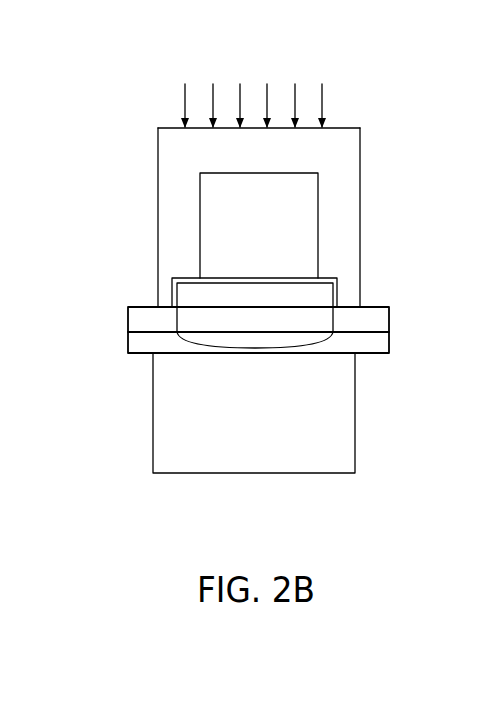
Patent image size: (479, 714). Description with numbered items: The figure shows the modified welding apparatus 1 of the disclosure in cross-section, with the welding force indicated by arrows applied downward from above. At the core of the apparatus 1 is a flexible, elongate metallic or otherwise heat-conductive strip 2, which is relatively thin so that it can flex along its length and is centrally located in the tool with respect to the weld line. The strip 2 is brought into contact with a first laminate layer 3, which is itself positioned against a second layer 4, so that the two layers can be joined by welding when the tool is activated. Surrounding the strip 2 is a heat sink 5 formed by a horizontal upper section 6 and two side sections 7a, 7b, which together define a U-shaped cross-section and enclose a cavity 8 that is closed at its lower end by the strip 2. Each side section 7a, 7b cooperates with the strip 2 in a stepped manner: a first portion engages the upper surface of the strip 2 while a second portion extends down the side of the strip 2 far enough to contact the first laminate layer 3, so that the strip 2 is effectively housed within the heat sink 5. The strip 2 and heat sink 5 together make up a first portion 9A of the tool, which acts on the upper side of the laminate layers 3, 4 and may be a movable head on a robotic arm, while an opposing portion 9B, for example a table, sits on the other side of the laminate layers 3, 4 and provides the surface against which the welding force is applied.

The welding apparatus 1 is at (382, 90).
The strip 2 is at (315, 293).
The first laminate layer 3 is at (389, 320).
The second layer 4 is at (389, 340).
The heat sink 5 is at (360, 150).
The horizontal upper section 6 is at (345, 128).
The side section 7a is at (158, 197).
The side section 7b is at (360, 207).
The cavity 8 is at (282, 213).
The first portion of the tool 9A is at (118, 355).
The opposing portion of the tool 9B is at (118, 358).